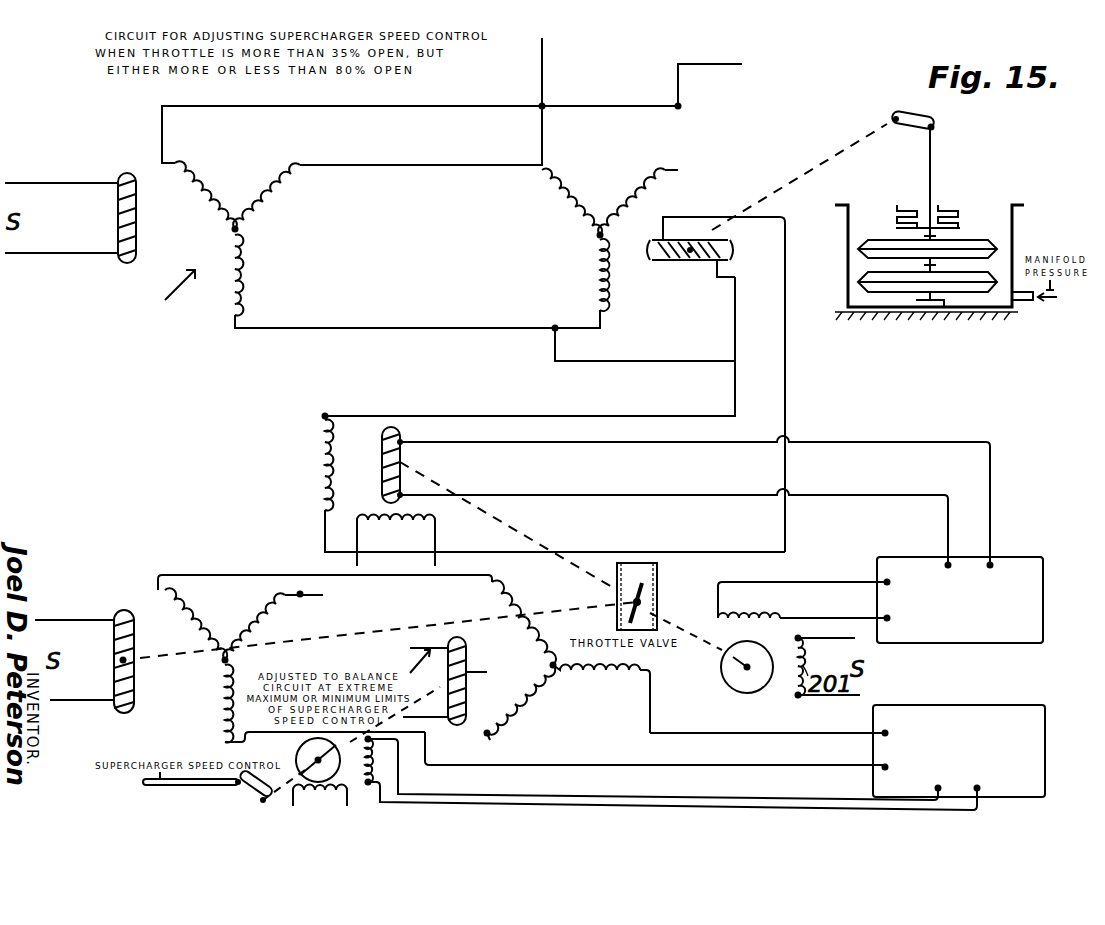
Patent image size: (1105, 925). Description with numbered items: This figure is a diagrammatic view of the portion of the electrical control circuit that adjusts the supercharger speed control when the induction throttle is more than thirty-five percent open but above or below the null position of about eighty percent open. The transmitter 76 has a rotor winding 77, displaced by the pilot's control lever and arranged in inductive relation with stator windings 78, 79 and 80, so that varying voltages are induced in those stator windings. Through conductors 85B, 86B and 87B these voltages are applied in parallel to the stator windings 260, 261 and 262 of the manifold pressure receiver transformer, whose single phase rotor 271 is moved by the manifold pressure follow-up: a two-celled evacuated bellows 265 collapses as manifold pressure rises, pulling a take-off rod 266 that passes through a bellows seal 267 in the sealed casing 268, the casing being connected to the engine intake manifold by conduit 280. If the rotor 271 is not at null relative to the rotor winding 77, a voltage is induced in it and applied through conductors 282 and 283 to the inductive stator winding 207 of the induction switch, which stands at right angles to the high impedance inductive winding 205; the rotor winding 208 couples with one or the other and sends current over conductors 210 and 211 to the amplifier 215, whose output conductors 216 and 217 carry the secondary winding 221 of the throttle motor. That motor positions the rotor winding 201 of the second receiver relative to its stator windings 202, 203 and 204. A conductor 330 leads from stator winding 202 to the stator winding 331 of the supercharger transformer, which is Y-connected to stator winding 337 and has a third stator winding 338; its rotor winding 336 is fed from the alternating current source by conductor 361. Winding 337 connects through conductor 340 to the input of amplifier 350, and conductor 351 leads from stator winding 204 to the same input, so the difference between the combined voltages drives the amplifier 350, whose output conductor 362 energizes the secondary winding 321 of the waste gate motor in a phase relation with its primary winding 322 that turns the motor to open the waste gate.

The transmitter 76 is at (176, 323).
The rotor winding 77 is at (118, 218).
The stator winding 78 is at (208, 190).
The stator winding 79 is at (278, 205).
The stator winding 80 is at (243, 275).
The electrical conductor 85B is at (380, 107).
The electrical conductor 86B is at (425, 167).
The electrical conductor 87B is at (410, 327).
The stator winding 260 is at (573, 198).
The stator winding 261 is at (652, 186).
The stator winding 262 is at (594, 278).
The single phase rotor 271 is at (690, 262).
The electrical conductor 282 is at (735, 361).
The electrical conductor 283 is at (787, 375).
The take-off rod 266 is at (932, 188).
The bellows seal 267 is at (962, 218).
The two-celled evacuated bellows 265 is at (1010, 266).
The casing 268 is at (846, 256).
The conduit 280 is at (1022, 301).
The inductive stator winding 207 is at (318, 474).
The rotor winding 208 is at (412, 464).
The high impedance inductive winding 205 is at (410, 528).
The electrical conductor 210 is at (882, 444).
The electrical conductor 211 is at (872, 497).
The amplifier 215 is at (985, 614).
The output conductor 216 is at (805, 582).
The output conductor 217 is at (814, 618).
The secondary winding 221 is at (752, 614).
The rotor winding 201 is at (110, 644).
The stator winding 202 is at (208, 610).
The stator winding 203 is at (275, 622).
The stator winding 204 is at (218, 702).
The conductor 330 is at (378, 577).
The stator winding 331 is at (530, 630).
The rotor winding 336 is at (436, 689).
The stator winding 337 is at (597, 676).
The stator winding 338 is at (522, 708).
The conductor 351 is at (492, 750).
The electrical conductor 340 is at (705, 733).
The secondary winding 321 is at (370, 760).
The primary winding 322 is at (345, 795).
The conductor 361 is at (548, 798).
The output conductor 362 is at (645, 805).
The amplifier 350 is at (985, 766).